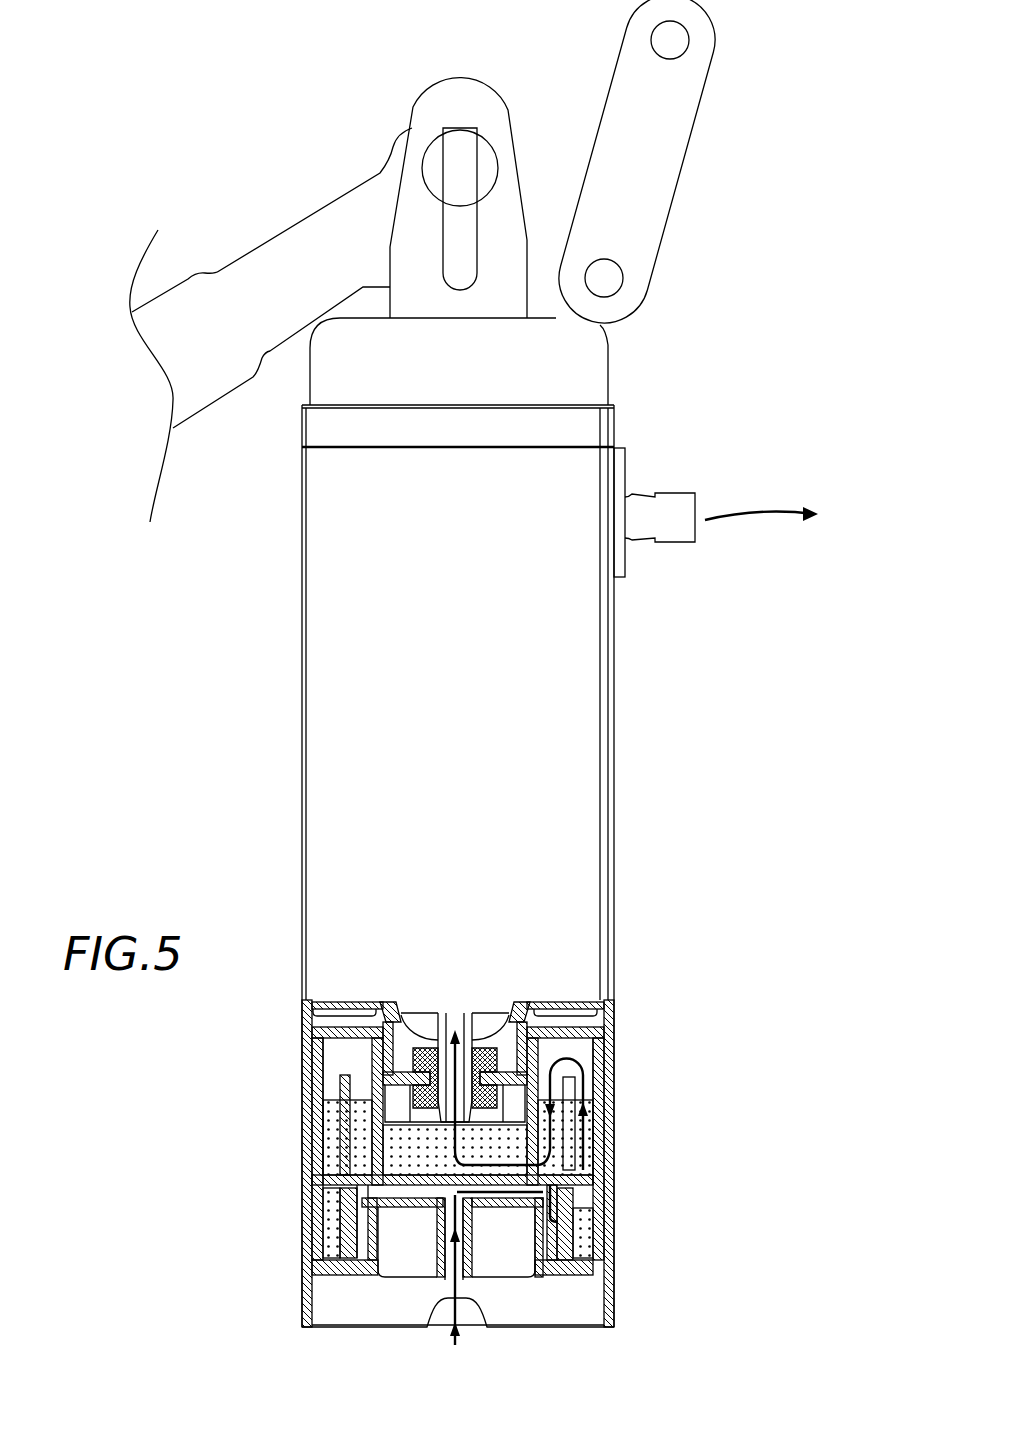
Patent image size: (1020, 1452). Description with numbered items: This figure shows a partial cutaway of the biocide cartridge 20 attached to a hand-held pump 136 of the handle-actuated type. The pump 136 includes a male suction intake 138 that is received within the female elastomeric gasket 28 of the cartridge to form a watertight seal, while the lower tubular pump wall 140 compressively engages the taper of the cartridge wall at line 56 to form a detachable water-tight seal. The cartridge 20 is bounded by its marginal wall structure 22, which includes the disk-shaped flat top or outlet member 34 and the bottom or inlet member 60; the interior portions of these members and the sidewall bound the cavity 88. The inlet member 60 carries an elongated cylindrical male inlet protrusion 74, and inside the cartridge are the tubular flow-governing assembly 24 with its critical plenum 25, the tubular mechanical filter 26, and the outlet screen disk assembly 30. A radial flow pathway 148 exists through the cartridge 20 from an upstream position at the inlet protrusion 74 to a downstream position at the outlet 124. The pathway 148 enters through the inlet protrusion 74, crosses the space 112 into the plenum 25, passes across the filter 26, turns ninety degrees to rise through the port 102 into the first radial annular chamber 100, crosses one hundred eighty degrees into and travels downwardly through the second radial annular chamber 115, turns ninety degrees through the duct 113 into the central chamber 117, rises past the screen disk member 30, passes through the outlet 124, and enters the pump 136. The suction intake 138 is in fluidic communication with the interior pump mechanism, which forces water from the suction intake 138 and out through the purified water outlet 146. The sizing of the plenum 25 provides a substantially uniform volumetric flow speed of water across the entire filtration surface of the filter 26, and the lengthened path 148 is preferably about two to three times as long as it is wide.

The biocide cartridge 20 is at (290, 1228).
The marginal wall structure 22 is at (618, 1207).
The tubular flow-governing assembly 24 is at (365, 1140).
The critical plenum 25 is at (360, 1240).
The tubular mechanical filter 26 is at (590, 1227).
The elastomeric gasket 28 is at (503, 1040).
The outlet screen disk assembly 30 is at (607, 1127).
The outlet member 34 is at (615, 1017).
The taper line 56 is at (607, 1078).
The inlet member 60 is at (590, 1302).
The male inlet protrusion 74 is at (615, 1316).
The cavity 88 is at (343, 1057).
The first radial annular chamber 100 is at (330, 1077).
The port 102 is at (615, 1165).
The space 112 is at (390, 1188).
The duct 113 is at (610, 1147).
The second radial annular chamber 115 is at (357, 1105).
The central chamber 117 is at (402, 1153).
The outlet 124 is at (437, 1017).
The hand-held pump 136 is at (588, 742).
The male suction intake 138 is at (474, 1013).
The lower tubular pump wall 140 is at (607, 1090).
The purified water outlet 146 is at (680, 510).
The radial flow pathway 148 is at (722, 518).